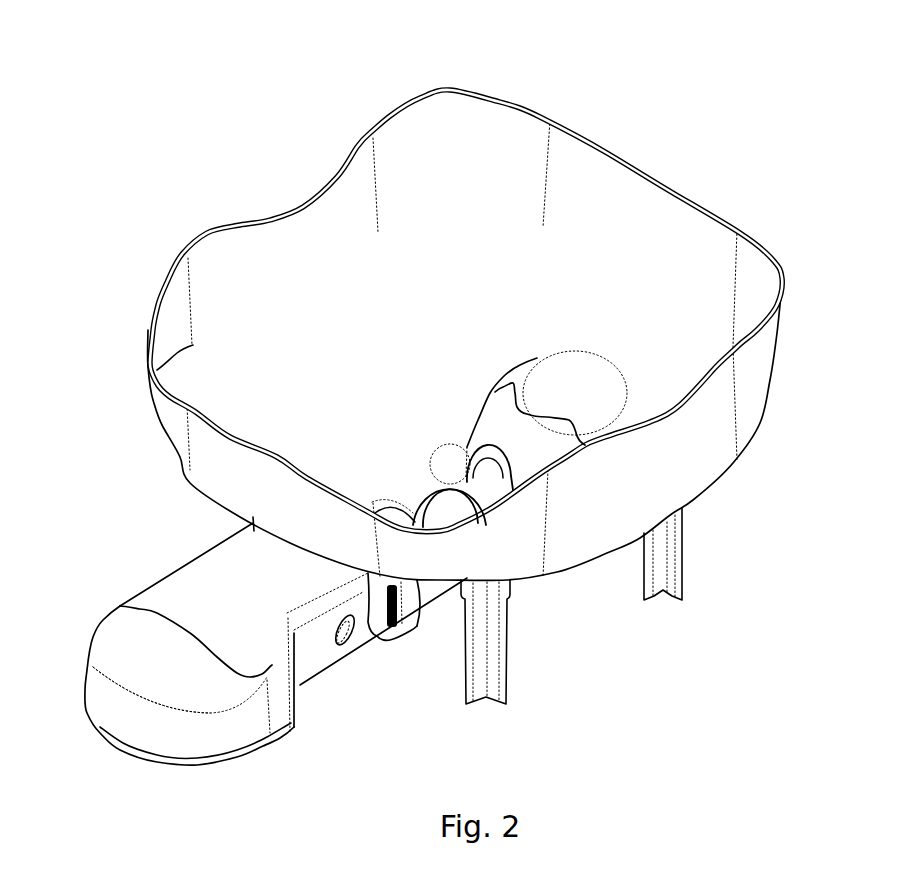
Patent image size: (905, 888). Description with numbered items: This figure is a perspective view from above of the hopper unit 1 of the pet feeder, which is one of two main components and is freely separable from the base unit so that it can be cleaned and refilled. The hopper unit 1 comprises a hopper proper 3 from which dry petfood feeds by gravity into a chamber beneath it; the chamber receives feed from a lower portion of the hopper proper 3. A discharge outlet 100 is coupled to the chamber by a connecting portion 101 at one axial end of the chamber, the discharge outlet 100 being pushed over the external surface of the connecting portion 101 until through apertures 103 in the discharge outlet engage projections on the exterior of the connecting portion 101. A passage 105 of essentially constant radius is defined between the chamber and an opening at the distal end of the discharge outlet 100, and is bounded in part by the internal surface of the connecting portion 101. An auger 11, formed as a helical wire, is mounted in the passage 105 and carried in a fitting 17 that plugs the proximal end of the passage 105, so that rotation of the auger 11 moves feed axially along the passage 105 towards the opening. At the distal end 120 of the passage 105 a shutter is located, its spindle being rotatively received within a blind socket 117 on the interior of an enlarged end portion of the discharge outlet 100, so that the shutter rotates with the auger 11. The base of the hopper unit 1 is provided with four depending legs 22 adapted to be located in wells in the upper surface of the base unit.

The hopper unit 1 is at (142, 90).
The hopper proper 3 is at (450, 88).
The auger 11 is at (433, 484).
The fitting 17 is at (497, 423).
The depending legs 22 is at (684, 567).
The discharge outlet 100 is at (274, 675).
The connecting portion 101 is at (412, 600).
The through apertures 103 is at (347, 642).
The passage 105 is at (230, 583).
The blind socket 117 is at (172, 730).
The distal end 120 is at (142, 730).